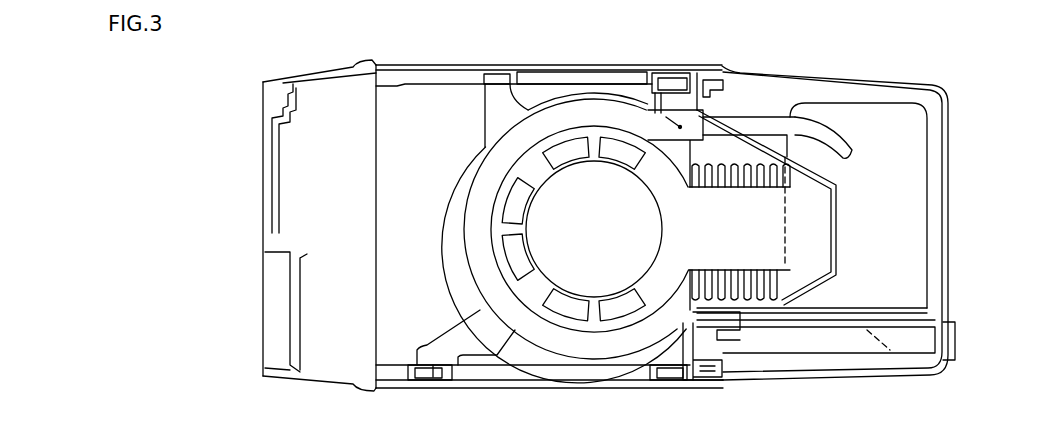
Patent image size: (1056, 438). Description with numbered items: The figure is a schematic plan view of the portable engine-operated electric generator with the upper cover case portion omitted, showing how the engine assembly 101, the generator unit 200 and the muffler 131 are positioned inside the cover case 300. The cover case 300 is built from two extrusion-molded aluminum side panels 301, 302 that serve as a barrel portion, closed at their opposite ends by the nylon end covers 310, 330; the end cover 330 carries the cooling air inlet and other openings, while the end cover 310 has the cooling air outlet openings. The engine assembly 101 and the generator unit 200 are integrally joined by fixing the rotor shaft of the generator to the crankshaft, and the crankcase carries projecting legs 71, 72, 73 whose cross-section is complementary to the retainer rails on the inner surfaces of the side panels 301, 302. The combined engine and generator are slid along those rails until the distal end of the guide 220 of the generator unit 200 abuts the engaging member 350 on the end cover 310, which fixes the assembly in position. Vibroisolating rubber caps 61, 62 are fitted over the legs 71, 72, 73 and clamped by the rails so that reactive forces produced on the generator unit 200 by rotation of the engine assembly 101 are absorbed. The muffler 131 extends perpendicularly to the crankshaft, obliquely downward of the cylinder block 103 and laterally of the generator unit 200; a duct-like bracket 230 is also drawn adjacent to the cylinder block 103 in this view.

The cover case 300 is at (779, 60).
The end cover 310 is at (880, 80).
The end cover 330 is at (308, 72).
The side panel 302 is at (578, 70).
The side panel 301 is at (635, 383).
The engaging member 350 is at (663, 77).
The projecting leg 72 is at (485, 108).
The projecting leg 73 is at (676, 380).
The vibroisolating rubber cap 61 is at (417, 380).
The vibroisolating rubber cap 62 is at (667, 378).
The projecting leg 71 is at (433, 380).
The generator unit 200 is at (515, 320).
The guide 220 is at (541, 360).
The engine assembly 101 is at (592, 285).
The duct bracket 230 is at (838, 185).
The cylinder block 103 is at (790, 238).
The muffler 131 is at (907, 215).